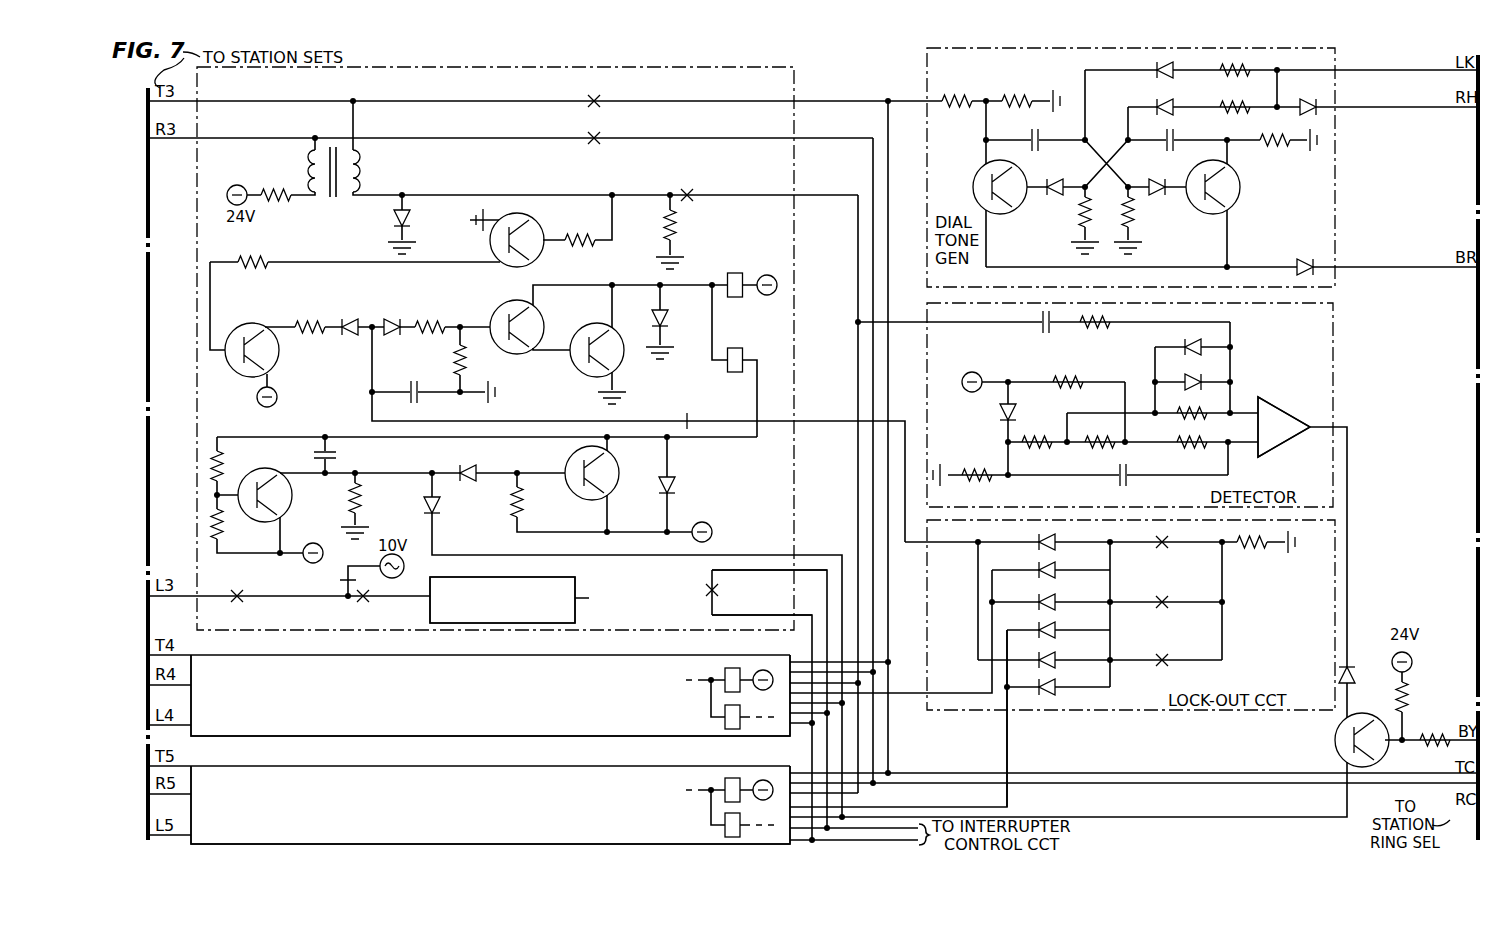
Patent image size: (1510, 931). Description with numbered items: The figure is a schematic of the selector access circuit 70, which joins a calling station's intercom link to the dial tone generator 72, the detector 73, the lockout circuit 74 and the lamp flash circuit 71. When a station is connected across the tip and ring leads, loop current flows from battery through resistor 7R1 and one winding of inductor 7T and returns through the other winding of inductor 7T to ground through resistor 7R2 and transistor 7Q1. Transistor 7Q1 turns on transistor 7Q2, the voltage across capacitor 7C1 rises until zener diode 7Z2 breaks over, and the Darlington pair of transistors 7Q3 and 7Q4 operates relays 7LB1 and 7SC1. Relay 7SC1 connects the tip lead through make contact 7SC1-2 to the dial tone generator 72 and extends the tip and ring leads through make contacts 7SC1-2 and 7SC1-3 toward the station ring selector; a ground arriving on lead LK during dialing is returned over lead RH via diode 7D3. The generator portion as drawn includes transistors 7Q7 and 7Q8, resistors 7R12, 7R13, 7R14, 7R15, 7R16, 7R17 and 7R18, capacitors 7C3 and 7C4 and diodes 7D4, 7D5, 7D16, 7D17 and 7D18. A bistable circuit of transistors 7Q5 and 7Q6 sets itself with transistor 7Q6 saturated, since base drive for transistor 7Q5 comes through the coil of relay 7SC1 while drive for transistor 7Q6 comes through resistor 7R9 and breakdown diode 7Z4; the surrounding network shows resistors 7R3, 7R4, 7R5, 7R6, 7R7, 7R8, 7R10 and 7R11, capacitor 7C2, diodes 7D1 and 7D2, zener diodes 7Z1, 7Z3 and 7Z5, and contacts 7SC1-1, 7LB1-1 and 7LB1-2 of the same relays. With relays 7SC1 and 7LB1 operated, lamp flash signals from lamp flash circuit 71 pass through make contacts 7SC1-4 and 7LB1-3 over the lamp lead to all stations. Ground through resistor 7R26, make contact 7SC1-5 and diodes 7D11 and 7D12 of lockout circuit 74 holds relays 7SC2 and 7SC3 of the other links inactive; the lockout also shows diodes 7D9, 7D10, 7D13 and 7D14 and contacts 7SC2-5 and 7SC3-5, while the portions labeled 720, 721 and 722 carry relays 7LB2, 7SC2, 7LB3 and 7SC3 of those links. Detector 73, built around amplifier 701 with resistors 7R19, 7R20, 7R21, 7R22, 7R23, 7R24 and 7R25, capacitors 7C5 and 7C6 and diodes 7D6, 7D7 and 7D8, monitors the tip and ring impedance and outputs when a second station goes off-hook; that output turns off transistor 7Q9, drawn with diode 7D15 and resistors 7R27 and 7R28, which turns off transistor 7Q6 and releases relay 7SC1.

The access circuit 70 is at (523, 338).
The lamp flash circuit 71 is at (575, 598).
The dial tone generator 72 is at (1335, 147).
The detector 73 is at (1333, 341).
The lockout circuit 74 is at (1146, 712).
The amplifier 701 is at (1270, 404).
The lamp flash connection 720 is at (735, 635).
The second line circuit 721 is at (713, 652).
The third line circuit 722 is at (745, 752).
The inductor 7T is at (334, 184).
The resistor 7R1 is at (273, 187).
The resistor 7R2 is at (579, 250).
The resistor 7R3 is at (686, 225).
The resistor 7R4 is at (253, 252).
The resistor 7R5 is at (309, 317).
The resistor 7R6 is at (432, 317).
The resistor 7R7 is at (476, 360).
The resistor 7R8 is at (534, 502).
The resistor 7R9 is at (370, 498).
The resistor 7R10 is at (238, 466).
The resistor 7R11 is at (238, 525).
The resistor 7R12 is at (1014, 92).
The resistor 7R13 is at (955, 92).
The resistor 7R14 is at (1234, 62).
The resistor 7R15 is at (1230, 102).
The resistor 7R16 is at (1274, 154).
The resistor 7R17 is at (1149, 212).
The resistor 7R18 is at (1064, 212).
The resistor 7R19 is at (1110, 318).
The resistor 7R20 is at (1072, 373).
The resistor 7R21 is at (1099, 453).
The resistor 7R22 is at (1042, 433).
The resistor 7R23 is at (974, 483).
The resistor 7R24 is at (1194, 453).
The resistor 7R25 is at (1180, 425).
The resistor 7R26 is at (1256, 554).
The resistor 7R27 is at (1440, 752).
The resistor 7R28 is at (1424, 697).
The capacitor 7C1 is at (415, 386).
The capacitor 7C2 is at (339, 457).
The capacitor 7C3 is at (1035, 132).
The capacitor 7C4 is at (1172, 127).
The capacitor 7C5 is at (1042, 336).
The capacitor 7C6 is at (1121, 488).
The diode 7D1 is at (348, 350).
The diode 7D2 is at (447, 508).
The diode 7D3 is at (1310, 99).
The diode 7D4 is at (1053, 179).
The diode 7D5 is at (1165, 179).
The diode 7D6 is at (1200, 347).
The diode 7D7 is at (1200, 378).
The diode 7D8 is at (990, 413).
The diode 7D9 is at (1050, 538).
The diode 7D10 is at (1050, 566).
The diode 7D11 is at (1050, 598).
The diode 7D12 is at (1050, 626).
The diode 7D13 is at (1050, 656).
The diode 7D14 is at (1050, 683).
The diode 7D15 is at (1363, 678).
The diode 7D16 is at (1305, 256).
The diode 7D17 is at (1160, 68).
The diode 7D18 is at (1160, 104).
The zener diode 7Z1 is at (387, 219).
The zener diode 7Z2 is at (392, 318).
The zener diode 7Z3 is at (684, 488).
The breakdown diode 7Z4 is at (466, 461).
The zener diode 7Z5 is at (680, 319).
The transistor 7Q1 is at (533, 223).
The transistor 7Q2 is at (243, 328).
The transistor 7Q3 is at (538, 320).
The transistor 7Q4 is at (574, 366).
The transistor 7Q5 is at (292, 492).
The transistor 7Q6 is at (610, 463).
The transistor 7Q7 is at (978, 170).
The transistor 7Q8 is at (1241, 190).
The transistor 7Q9 is at (1334, 737).
The relay 7LB1 is at (737, 275).
The line busy relay 7LB2 is at (717, 677).
The line busy relay 7LB3 is at (717, 787).
The relay 7SC1 is at (731, 372).
The relay 7SC2 is at (715, 720).
The relay 7SC3 is at (715, 828).
The relay contact 7SC1-1 is at (675, 185).
The make contact 7SC1-2 is at (595, 91).
The make contact 7SC1-3 is at (595, 130).
The make contact 7SC1-4 is at (357, 607).
The make contact 7SC1-5 is at (1160, 613).
The relay contact 7SC2-5 is at (1160, 670).
The relay contact 7SC3-5 is at (1160, 554).
The relay contact 7LB1-1 is at (683, 593).
The relay contact 7LB1-2 is at (668, 413).
The make contact 7LB1-3 is at (236, 607).